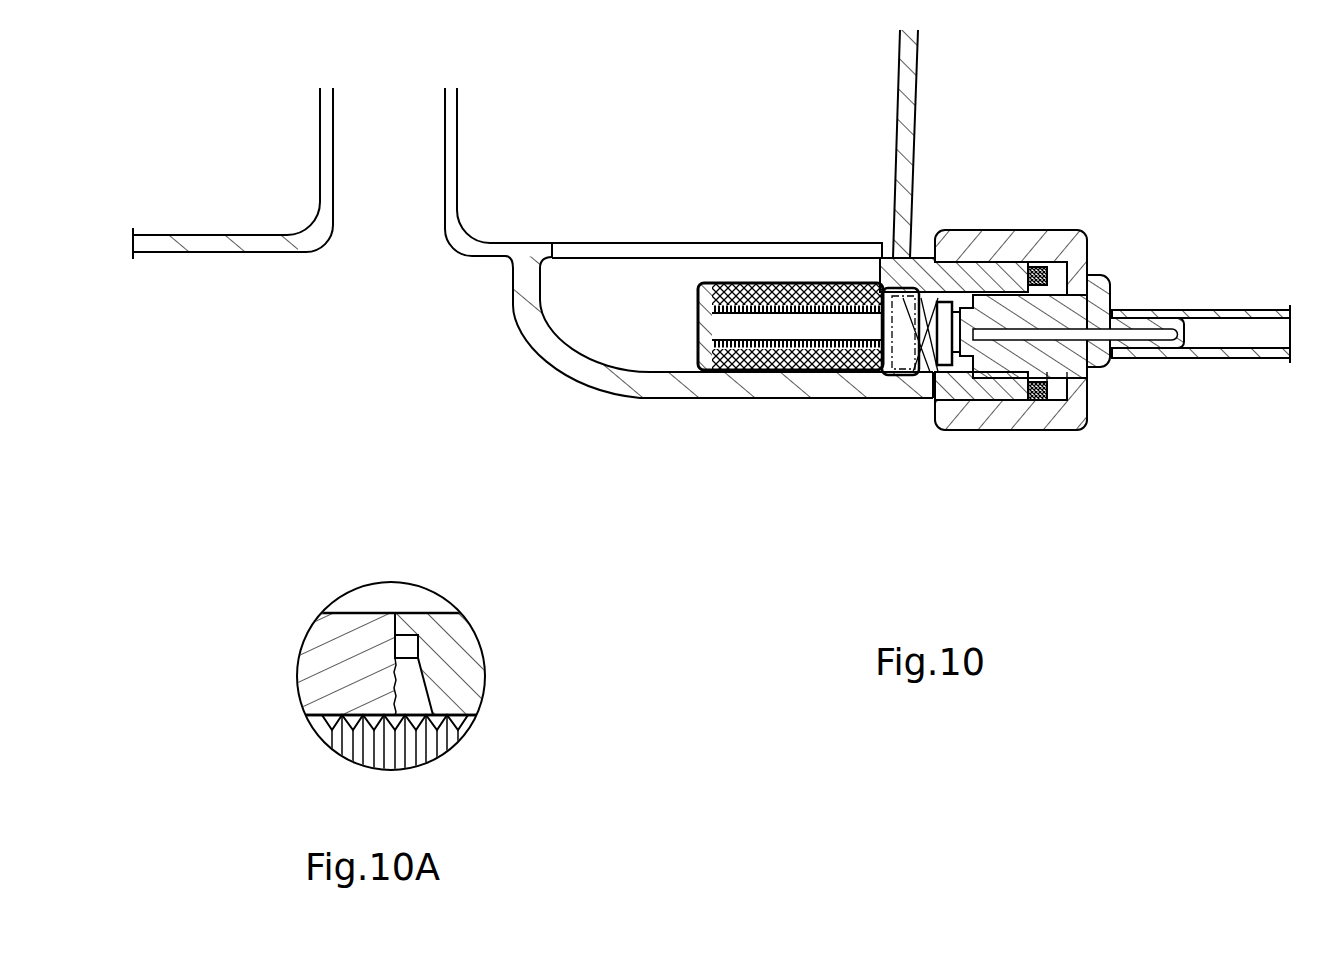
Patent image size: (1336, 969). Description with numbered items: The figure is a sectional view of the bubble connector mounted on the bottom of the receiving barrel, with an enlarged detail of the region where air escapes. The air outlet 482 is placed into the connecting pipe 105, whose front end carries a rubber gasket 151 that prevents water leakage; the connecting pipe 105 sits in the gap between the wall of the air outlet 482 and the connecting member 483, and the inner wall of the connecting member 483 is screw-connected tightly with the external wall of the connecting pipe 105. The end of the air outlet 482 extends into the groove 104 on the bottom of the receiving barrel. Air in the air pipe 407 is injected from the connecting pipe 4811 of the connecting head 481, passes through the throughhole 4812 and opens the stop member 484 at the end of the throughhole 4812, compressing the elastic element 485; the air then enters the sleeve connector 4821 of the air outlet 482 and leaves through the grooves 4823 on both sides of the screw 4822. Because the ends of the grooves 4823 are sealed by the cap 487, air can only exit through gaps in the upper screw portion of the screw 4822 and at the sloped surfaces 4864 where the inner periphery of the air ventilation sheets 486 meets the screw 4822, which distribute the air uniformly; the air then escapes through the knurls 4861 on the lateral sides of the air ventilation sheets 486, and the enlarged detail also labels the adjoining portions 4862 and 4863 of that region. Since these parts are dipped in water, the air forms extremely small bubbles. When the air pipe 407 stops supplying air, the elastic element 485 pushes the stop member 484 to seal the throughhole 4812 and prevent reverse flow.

In FIG. 10, the groove 104 is at (570, 290).
In FIG. 10, the connecting pipe 105 is at (933, 392).
In FIG. 10, the rubber gasket 151 is at (1018, 400).
In FIG. 10, the air pipe 407 is at (1228, 310).
In FIG. 10, the connecting head 481 is at (1103, 278).
In FIG. 10, the connecting pipe 4811 is at (1148, 345).
In FIG. 10, the throughhole 4812 is at (1187, 334).
In FIG. 10, the air outlet 482 is at (927, 285).
In FIG. 10, the sleeve connector 4821 is at (1027, 268).
In FIG. 10, the screw 4822 is at (688, 297).
In FIG. 10A, the screw 4822 is at (347, 742).
In FIG. 10, the grooves 4823 is at (760, 323).
In FIG. 10, the connecting member 483 is at (1040, 232).
In FIG. 10, the stop member 484 is at (925, 370).
In FIG. 10, the elastic element 485 is at (902, 374).
In FIG. 10, the air ventilation sheets 486 is at (747, 283).
In FIG. 10A, the air ventilation sheets 486 is at (323, 636).
In FIG. 10A, the knurls 4861 is at (396, 628).
In FIG. 10A, the ring 4862 is at (473, 617).
In FIG. 10A, the ring 4863 is at (425, 686).
In FIG. 10, the sloped surfaces 4864 is at (722, 375).
In FIG. 10A, the sloped surfaces 4864 is at (413, 690).
In FIG. 10, the cap 487 is at (693, 335).